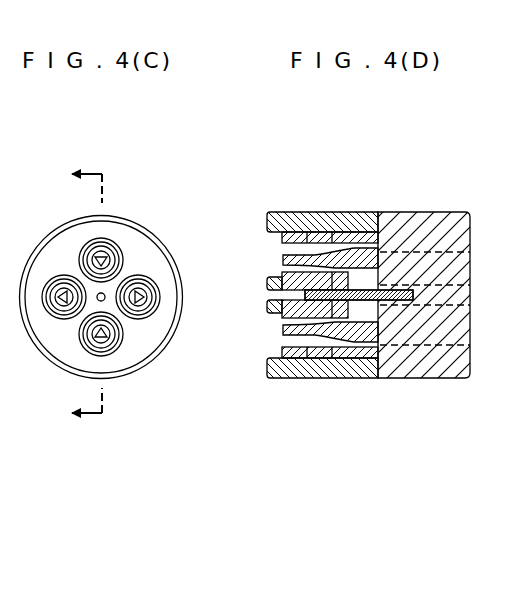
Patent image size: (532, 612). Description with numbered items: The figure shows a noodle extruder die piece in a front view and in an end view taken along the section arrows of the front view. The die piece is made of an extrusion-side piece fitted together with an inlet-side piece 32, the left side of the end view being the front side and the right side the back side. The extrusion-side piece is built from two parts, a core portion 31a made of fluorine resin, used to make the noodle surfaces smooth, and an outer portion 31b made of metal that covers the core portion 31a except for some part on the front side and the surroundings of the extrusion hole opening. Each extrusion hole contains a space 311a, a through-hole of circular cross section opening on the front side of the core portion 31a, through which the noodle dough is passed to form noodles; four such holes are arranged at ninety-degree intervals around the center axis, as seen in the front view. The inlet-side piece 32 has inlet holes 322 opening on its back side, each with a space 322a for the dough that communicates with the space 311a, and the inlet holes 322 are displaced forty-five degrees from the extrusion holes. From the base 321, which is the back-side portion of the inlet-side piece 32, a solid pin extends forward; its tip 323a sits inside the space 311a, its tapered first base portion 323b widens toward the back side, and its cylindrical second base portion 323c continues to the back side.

The core portion 31a is at (320, 236).
The outer portion 31b is at (360, 222).
The space 311a is at (295, 228).
The inlet-side piece 32 is at (441, 293).
The base 321 is at (442, 350).
The inlet hole 322 is at (470, 325).
The space 322a is at (472, 262).
The tip 323a is at (291, 374).
The first base portion 323b is at (340, 374).
The second base portion 323c is at (278, 444).